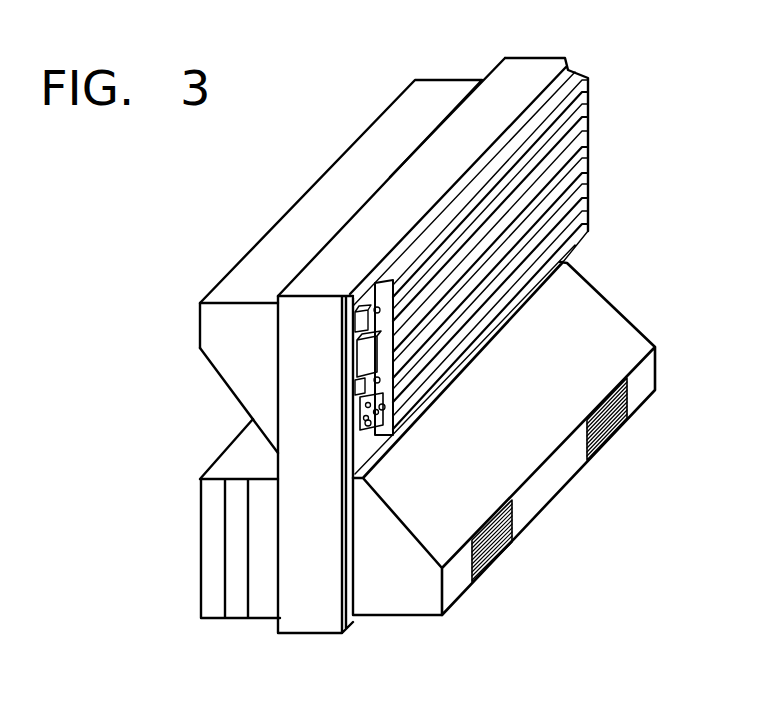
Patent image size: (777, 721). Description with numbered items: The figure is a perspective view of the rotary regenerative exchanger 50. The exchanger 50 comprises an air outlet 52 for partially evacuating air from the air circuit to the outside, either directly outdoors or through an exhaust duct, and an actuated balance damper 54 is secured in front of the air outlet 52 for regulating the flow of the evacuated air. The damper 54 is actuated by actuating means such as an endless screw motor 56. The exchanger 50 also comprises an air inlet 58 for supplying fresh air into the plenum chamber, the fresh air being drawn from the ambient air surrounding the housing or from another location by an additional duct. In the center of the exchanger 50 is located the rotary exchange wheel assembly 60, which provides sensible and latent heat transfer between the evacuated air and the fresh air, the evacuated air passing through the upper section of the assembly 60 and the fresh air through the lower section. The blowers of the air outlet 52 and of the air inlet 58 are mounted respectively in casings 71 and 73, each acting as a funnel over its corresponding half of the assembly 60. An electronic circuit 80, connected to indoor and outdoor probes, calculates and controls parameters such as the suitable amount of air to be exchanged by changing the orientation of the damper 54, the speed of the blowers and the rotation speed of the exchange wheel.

The exchanger 50 is at (358, 102).
The air outlet 52 is at (196, 322).
The balance damper 54 is at (577, 153).
The endless screw motor 56 is at (360, 358).
The air inlet 58 is at (194, 548).
The rotary exchange wheel assembly 60 is at (548, 56).
The casing 71 is at (222, 355).
The casing 73 is at (420, 598).
The electronic circuit 80 is at (360, 422).